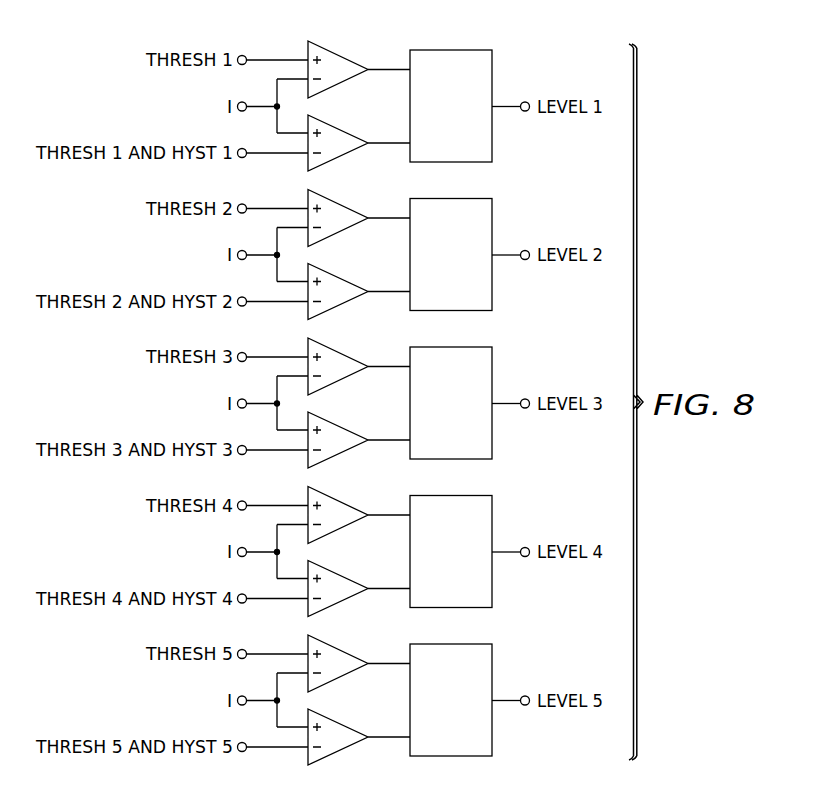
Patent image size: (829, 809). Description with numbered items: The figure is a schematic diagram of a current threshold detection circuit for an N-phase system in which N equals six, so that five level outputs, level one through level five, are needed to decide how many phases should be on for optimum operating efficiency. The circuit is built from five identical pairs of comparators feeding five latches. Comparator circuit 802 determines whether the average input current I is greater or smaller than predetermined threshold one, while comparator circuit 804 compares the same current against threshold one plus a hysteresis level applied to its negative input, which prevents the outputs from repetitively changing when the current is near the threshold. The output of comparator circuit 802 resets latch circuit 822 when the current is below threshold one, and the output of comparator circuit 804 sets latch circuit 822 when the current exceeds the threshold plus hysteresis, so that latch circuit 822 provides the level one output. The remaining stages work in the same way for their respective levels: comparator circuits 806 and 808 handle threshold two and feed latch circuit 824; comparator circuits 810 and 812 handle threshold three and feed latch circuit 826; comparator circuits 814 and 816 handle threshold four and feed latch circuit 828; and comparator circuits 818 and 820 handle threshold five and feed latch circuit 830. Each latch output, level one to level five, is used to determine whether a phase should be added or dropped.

The comparator circuit 802 is at (337, 53).
The comparator circuit 804 is at (337, 128).
The comparator circuit 806 is at (337, 202).
The comparator circuit 808 is at (337, 277).
The comparator circuit 810 is at (337, 351).
The comparator circuit 812 is at (338, 455).
The comparator circuit 814 is at (338, 528).
The comparator circuit 816 is at (338, 602).
The comparator circuit 818 is at (338, 678).
The comparator circuit 820 is at (338, 751).
The latch circuit 822 is at (492, 78).
The latch circuit 824 is at (492, 226).
The latch circuit 826 is at (492, 375).
The latch circuit 828 is at (492, 580).
The latch circuit 830 is at (492, 727).